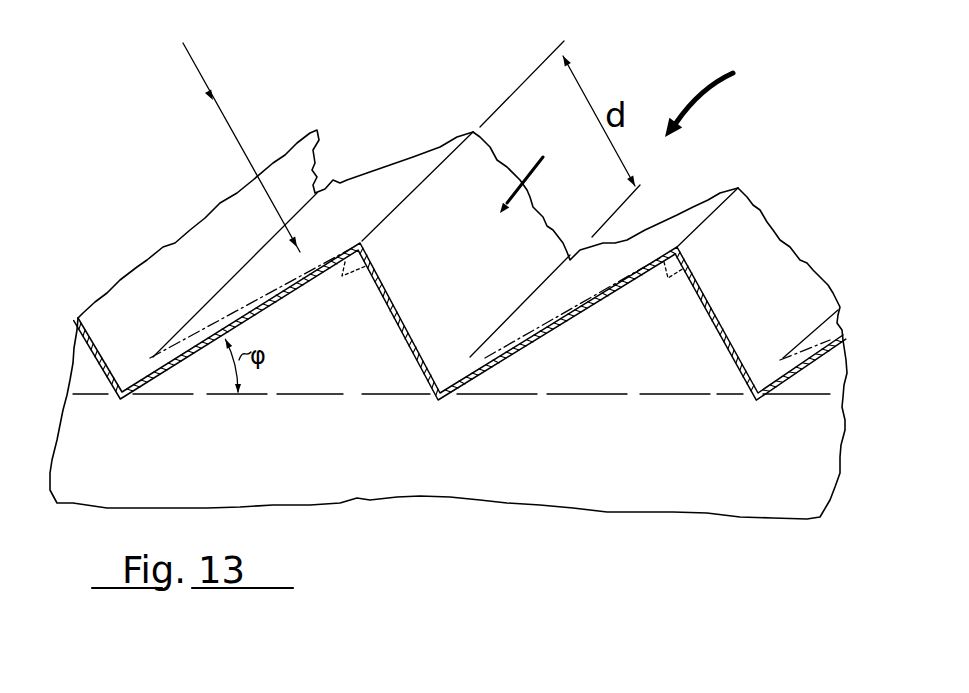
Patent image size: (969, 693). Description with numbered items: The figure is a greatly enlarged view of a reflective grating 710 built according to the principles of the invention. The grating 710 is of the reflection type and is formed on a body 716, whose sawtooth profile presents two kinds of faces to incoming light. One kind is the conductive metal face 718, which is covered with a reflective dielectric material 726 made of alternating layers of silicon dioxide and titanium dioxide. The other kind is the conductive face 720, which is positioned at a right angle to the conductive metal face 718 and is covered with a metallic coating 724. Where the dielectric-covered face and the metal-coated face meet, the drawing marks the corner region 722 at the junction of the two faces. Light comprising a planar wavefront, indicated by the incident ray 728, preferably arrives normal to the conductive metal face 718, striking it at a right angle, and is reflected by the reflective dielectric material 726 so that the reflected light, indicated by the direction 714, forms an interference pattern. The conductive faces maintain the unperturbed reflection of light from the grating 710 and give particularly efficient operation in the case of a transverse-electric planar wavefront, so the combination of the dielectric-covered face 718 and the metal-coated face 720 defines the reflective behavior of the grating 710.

The grating 710 is at (725, 99).
The reflected beam direction 714 is at (541, 170).
The substrate 716 is at (472, 469).
The conductive metal face 718 is at (347, 197).
The conductive face 720 is at (513, 237).
The facet edge 722 is at (347, 280).
The metallic coating 724 is at (400, 307).
The reflective dielectric material 726 is at (213, 300).
The incident ray 728 is at (187, 60).